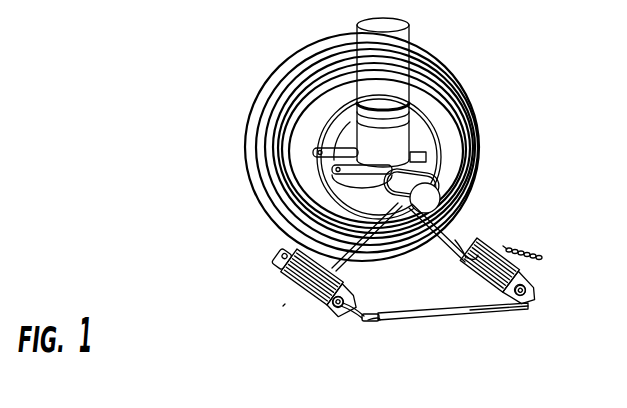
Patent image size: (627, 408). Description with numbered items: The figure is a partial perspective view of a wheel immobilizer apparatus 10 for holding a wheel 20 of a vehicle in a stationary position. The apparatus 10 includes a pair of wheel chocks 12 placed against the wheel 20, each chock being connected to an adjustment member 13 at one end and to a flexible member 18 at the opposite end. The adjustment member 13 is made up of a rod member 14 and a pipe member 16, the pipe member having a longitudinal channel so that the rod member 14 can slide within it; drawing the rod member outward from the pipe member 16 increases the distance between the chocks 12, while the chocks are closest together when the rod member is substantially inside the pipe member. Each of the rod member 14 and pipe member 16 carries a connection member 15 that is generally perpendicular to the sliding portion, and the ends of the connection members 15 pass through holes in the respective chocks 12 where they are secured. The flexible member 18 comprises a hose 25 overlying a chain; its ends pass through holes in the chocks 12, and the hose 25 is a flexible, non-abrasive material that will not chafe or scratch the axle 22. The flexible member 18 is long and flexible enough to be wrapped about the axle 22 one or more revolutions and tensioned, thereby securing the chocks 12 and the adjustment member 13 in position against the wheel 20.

The wheel immobilizer apparatus 10 is at (286, 300).
The wheel chocks 12 is at (296, 252).
The adjustment member 13 is at (432, 324).
The rod member 14 is at (378, 322).
The connection member 15 is at (350, 322).
The pipe member 16 is at (472, 320).
The flexible member 18 is at (451, 238).
The wheel 20 is at (257, 100).
The axle 22 is at (425, 198).
The hose 25 is at (462, 258).